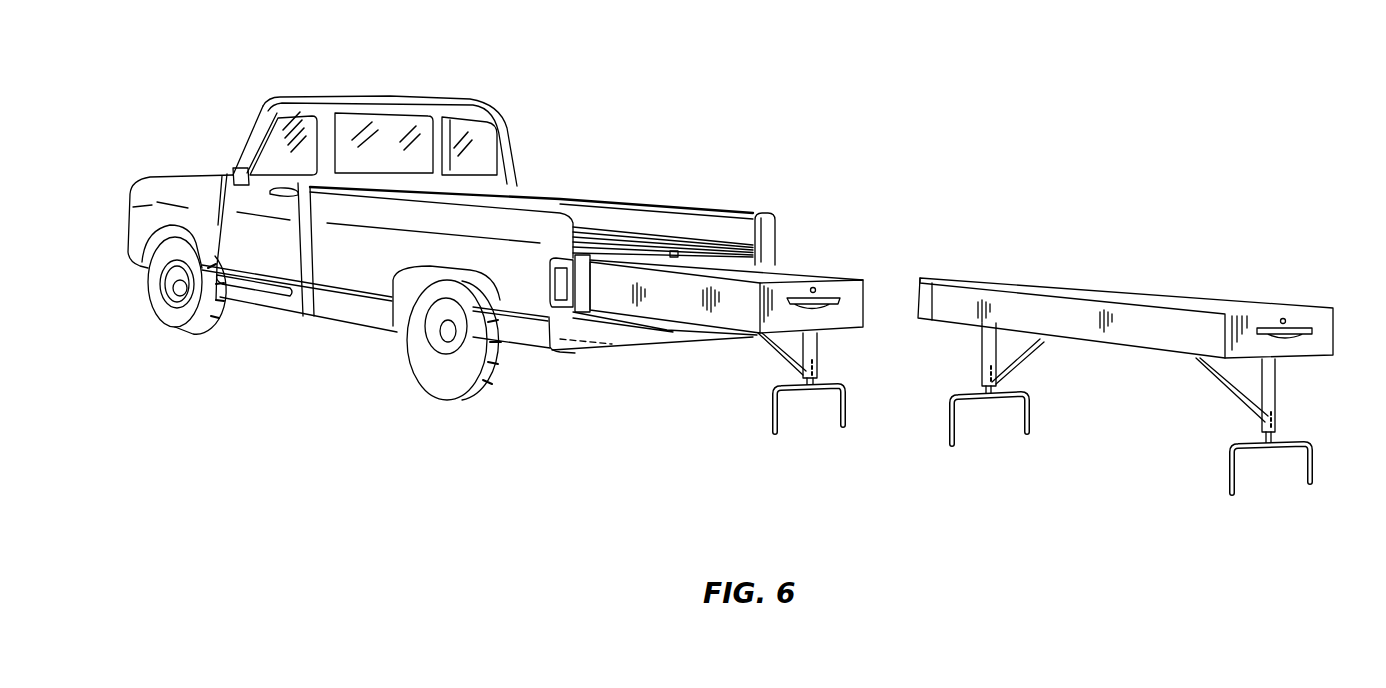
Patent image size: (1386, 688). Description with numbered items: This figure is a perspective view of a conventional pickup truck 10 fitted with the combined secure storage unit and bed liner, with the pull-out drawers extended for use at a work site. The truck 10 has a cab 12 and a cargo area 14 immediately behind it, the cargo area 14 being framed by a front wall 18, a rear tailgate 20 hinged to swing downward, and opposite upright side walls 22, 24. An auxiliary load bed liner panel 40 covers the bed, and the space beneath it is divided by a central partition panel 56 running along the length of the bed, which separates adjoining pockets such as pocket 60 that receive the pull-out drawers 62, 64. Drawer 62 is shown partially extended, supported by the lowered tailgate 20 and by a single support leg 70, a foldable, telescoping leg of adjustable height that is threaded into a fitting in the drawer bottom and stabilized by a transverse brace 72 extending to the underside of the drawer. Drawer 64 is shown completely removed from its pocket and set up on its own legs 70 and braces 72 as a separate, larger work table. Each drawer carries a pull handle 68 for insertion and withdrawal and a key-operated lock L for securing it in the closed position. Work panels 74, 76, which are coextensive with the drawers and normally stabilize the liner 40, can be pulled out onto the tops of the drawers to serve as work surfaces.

The pickup truck 10 is at (213, 123).
The cab 12 is at (475, 99).
The cargo area 14 is at (596, 180).
The front wall 18 is at (497, 190).
The rear tailgate 20 is at (654, 320).
The side wall 22 is at (398, 242).
The side wall 24 is at (683, 212).
The auxiliary load bed liner panel 40 is at (633, 239).
The central partition panel 56 is at (685, 250).
The pocket 60 is at (733, 260).
The pull-out drawer 62 is at (737, 308).
The pull-out drawer 64 is at (1163, 332).
The pull handle 68 is at (830, 306).
The support leg 70 is at (822, 370).
The transverse brace 72 is at (980, 363).
The work panel 74 is at (637, 256).
The work panel 76 is at (712, 252).
The key-operated lock L is at (818, 288).